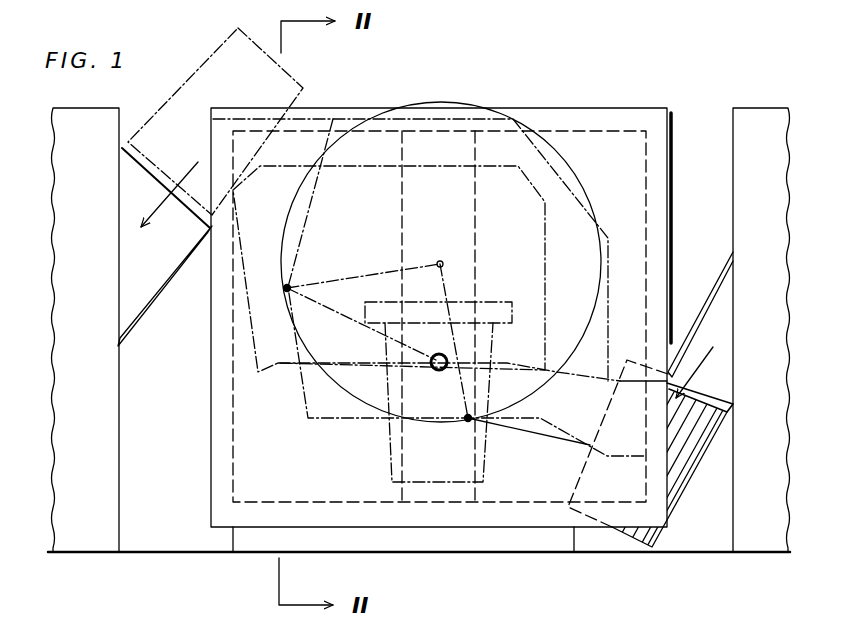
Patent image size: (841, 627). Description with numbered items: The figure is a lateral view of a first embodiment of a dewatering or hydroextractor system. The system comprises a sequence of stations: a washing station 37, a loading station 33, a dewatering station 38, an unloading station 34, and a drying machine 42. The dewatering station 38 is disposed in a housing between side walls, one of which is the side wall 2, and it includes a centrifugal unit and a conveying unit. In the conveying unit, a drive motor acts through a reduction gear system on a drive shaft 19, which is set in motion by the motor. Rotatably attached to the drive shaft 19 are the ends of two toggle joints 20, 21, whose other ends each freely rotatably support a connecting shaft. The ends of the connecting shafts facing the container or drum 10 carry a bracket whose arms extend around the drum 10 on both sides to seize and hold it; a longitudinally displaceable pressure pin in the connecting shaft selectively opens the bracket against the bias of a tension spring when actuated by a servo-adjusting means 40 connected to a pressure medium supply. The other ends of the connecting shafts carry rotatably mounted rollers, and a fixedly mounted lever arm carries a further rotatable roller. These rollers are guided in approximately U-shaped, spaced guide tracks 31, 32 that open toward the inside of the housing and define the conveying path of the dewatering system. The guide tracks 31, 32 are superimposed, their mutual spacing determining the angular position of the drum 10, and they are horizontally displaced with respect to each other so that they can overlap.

The side wall 2 is at (593, 106).
The container or drum 10 is at (486, 465).
The drive shaft 19 is at (441, 261).
The toggle joint 20 is at (357, 273).
The toggle joint 21 is at (566, 443).
The guide track 31 is at (395, 113).
The guide track 32 is at (448, 162).
The loading station 33 is at (689, 497).
The unloading station 34 is at (162, 96).
The washing station 37 is at (752, 454).
The dewatering station 38 is at (432, 490).
The servo-adjusting means 40 is at (436, 370).
The drying machine 42 is at (93, 462).